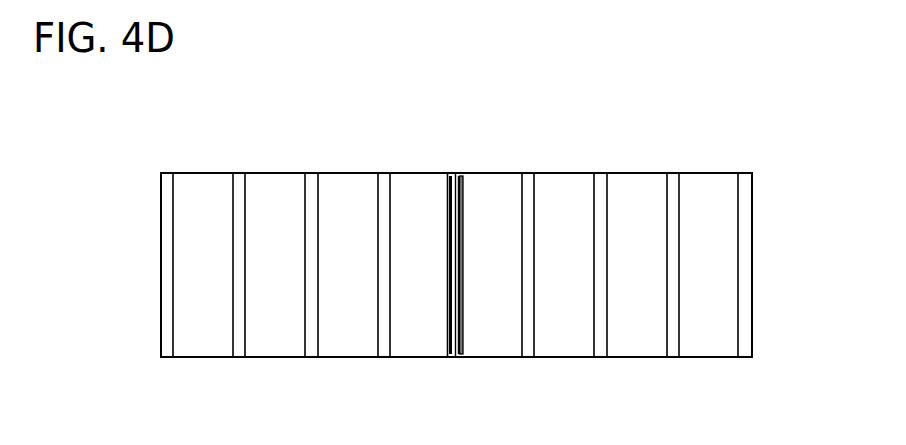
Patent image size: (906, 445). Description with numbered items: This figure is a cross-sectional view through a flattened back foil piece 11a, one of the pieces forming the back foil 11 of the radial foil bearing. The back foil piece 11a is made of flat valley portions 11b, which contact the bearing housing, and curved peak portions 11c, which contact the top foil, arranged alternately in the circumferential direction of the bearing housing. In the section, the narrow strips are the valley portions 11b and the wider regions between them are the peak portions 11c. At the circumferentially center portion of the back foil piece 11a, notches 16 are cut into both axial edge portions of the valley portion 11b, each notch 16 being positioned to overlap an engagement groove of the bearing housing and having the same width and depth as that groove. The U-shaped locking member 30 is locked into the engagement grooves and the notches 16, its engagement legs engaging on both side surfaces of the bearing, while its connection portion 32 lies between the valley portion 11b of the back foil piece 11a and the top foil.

The back foil 11 is at (474, 218).
The back foil piece 11a is at (672, 150).
The valley portion 11b is at (240, 192).
The peak portion 11c is at (276, 202).
The notch 16 is at (457, 175).
The locking member 30 is at (441, 330).
The connection portion 32 is at (462, 273).